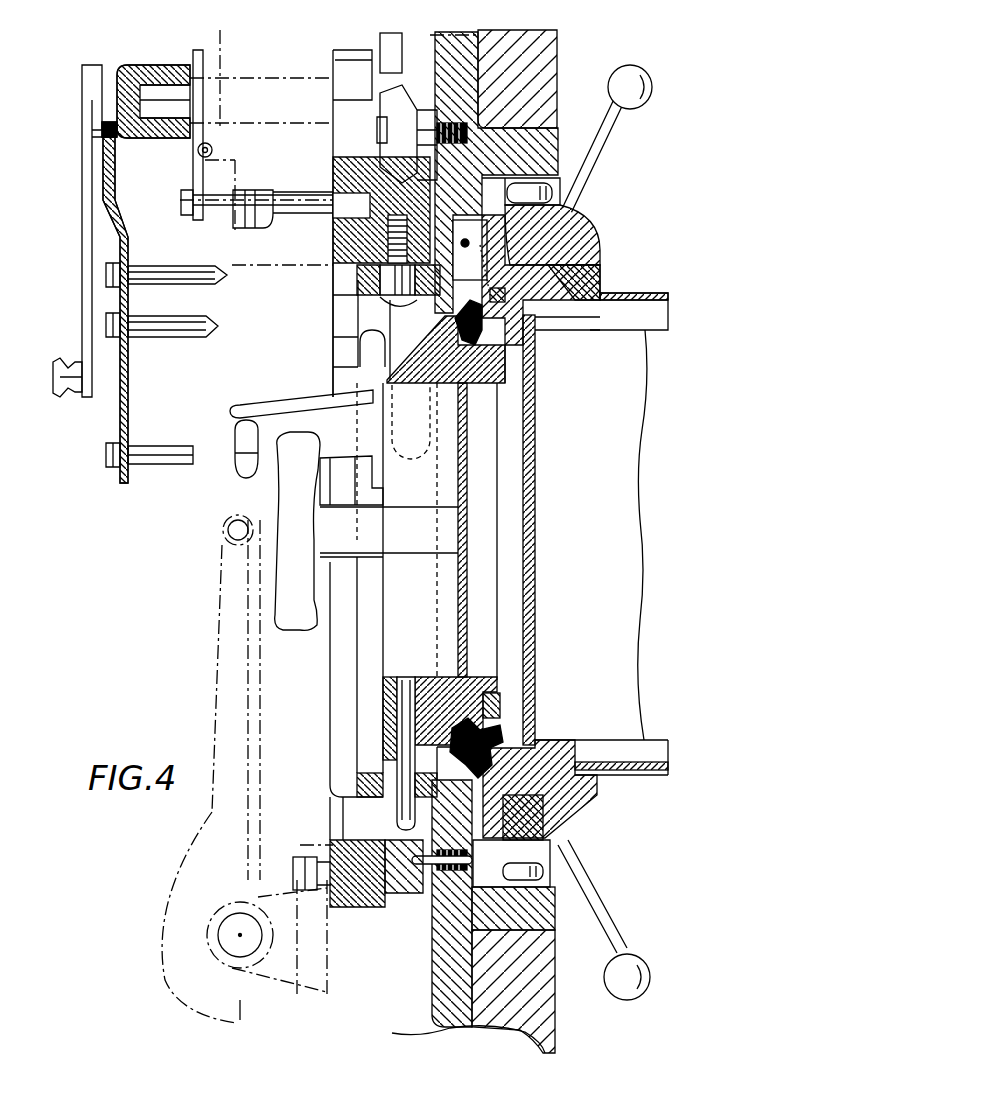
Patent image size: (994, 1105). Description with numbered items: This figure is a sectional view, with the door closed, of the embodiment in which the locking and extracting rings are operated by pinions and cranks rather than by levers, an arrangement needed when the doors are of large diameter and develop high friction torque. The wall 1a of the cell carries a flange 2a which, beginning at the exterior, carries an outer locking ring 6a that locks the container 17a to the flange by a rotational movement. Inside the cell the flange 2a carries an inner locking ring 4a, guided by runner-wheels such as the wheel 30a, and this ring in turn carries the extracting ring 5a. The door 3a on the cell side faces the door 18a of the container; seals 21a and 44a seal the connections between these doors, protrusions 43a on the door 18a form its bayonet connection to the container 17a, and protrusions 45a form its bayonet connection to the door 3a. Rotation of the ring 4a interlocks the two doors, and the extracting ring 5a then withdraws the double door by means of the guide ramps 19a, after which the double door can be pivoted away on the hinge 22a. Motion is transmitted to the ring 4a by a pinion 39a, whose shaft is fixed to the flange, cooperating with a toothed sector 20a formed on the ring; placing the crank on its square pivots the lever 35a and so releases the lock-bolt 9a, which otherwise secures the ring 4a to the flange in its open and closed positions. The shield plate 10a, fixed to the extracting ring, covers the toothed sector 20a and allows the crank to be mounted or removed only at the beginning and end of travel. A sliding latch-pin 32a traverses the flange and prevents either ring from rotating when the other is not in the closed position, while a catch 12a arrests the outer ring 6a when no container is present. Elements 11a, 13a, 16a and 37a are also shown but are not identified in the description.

The wall of the cell 1a is at (545, 24).
The flange 2a is at (464, 44).
The door 3a is at (458, 600).
The inner locking ring 4a is at (380, 905).
The extracting ring 5a is at (360, 758).
The outer locking ring 6a is at (585, 228).
The lock-bolt 9a is at (178, 226).
The shield plate 10a is at (110, 198).
The clip 11a is at (283, 220).
The catch 12a is at (590, 285).
The clamp 13a is at (142, 62).
The pin 16a is at (398, 728).
The container 17a is at (640, 294).
The door 18a is at (532, 479).
The guide ramp 19a is at (380, 354).
The toothed sector 20a is at (338, 156).
The seal 21a is at (528, 334).
The hinge 22a is at (222, 668).
The runner-wheel 30a is at (408, 90).
The sliding latch-pin 32a is at (415, 894).
The lever 35a is at (196, 56).
The pivot 37a is at (240, 1010).
The pinion 39a is at (345, 54).
The protrusions 43a is at (578, 318).
The seal 44a is at (500, 737).
The protrusions 45a is at (498, 706).